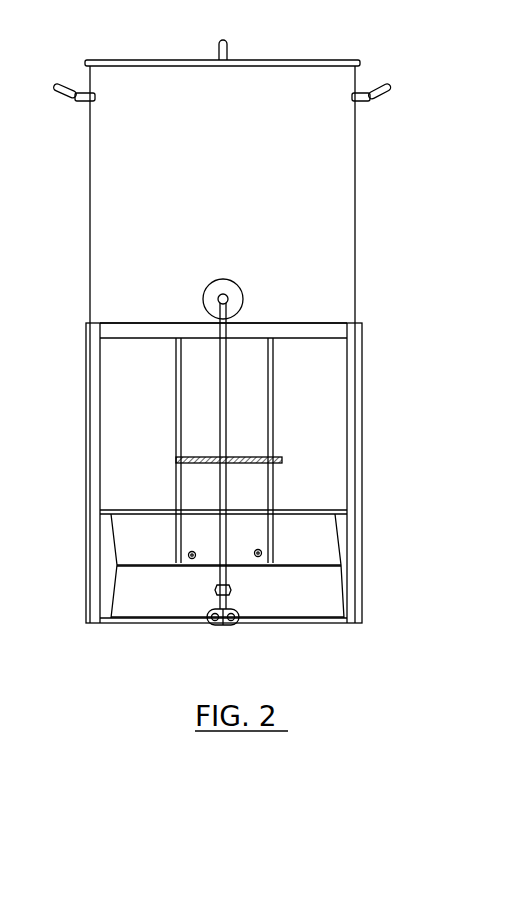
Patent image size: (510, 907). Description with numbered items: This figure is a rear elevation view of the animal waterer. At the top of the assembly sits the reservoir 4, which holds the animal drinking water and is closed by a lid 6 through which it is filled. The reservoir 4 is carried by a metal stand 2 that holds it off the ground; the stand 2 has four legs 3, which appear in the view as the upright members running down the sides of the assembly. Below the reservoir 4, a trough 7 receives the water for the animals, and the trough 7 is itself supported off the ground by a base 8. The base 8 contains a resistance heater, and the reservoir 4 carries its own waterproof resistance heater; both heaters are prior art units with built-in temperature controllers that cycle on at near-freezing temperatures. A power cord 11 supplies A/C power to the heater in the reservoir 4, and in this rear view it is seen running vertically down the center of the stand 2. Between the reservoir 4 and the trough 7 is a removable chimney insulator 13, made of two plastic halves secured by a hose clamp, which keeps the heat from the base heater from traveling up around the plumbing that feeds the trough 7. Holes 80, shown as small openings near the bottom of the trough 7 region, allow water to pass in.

The stand 2 is at (291, 332).
The legs 3 is at (357, 415).
The reservoir 4 is at (345, 136).
The lid 6 is at (304, 60).
The trough 7 is at (163, 530).
The base 8 is at (190, 588).
The power cord 11 is at (221, 400).
The chimney insulator 13 is at (191, 373).
The holes 80 is at (262, 553).